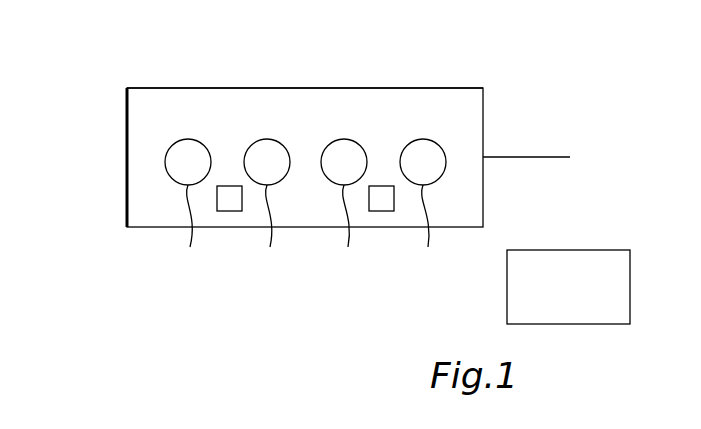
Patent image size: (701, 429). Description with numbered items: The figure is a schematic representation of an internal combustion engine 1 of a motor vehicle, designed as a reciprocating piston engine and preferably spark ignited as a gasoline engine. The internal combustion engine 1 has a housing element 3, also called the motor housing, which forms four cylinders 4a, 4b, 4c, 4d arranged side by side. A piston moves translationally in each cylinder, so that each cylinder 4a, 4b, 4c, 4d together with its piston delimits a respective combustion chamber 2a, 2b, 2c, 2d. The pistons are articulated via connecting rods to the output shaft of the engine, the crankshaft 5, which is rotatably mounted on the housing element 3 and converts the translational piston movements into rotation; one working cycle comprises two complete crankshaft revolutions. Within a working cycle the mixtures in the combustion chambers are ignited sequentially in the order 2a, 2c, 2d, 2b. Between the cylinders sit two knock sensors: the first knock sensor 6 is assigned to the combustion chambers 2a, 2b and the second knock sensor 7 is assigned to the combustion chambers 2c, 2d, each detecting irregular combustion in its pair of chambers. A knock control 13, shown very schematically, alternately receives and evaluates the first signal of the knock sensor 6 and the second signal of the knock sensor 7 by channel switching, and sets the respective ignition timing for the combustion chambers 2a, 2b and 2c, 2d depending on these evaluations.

The internal combustion engine 1 is at (125, 108).
The housing element 3 is at (440, 88).
The cylinder 4a is at (190, 139).
The cylinder 4b is at (270, 139).
The cylinder 4c is at (348, 139).
The cylinder 4d is at (437, 144).
The combustion chamber 2a is at (183, 231).
The combustion chamber 2b is at (264, 231).
The combustion chamber 2c is at (343, 231).
The combustion chamber 2d is at (424, 231).
The first knock sensor 6 is at (229, 211).
The second knock sensor 7 is at (381, 211).
The crankshaft 5 is at (540, 161).
The knock control 13 is at (608, 250).